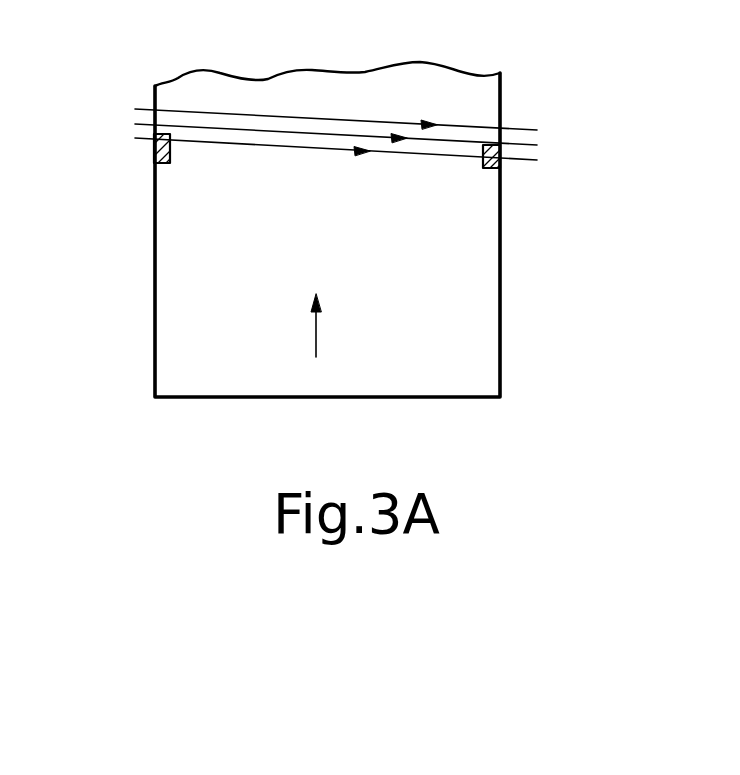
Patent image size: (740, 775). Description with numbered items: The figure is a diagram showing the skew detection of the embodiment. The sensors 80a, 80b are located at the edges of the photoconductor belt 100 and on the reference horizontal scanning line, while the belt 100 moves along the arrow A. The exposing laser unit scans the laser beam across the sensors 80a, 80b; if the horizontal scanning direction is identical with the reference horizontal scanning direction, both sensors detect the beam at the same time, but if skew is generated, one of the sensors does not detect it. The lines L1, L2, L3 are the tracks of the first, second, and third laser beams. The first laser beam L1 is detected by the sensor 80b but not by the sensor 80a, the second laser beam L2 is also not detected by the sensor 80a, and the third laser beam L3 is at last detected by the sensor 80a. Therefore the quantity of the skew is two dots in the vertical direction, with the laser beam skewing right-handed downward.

The photoconductor belt 100 is at (487, 349).
The sensor 80a is at (154, 148).
The sensor 80b is at (500, 167).
The track of first laser beam L1 is at (302, 118).
The track of second laser beam L2 is at (238, 128).
The track of third laser beam L3 is at (193, 142).
The arrow A is at (316, 337).